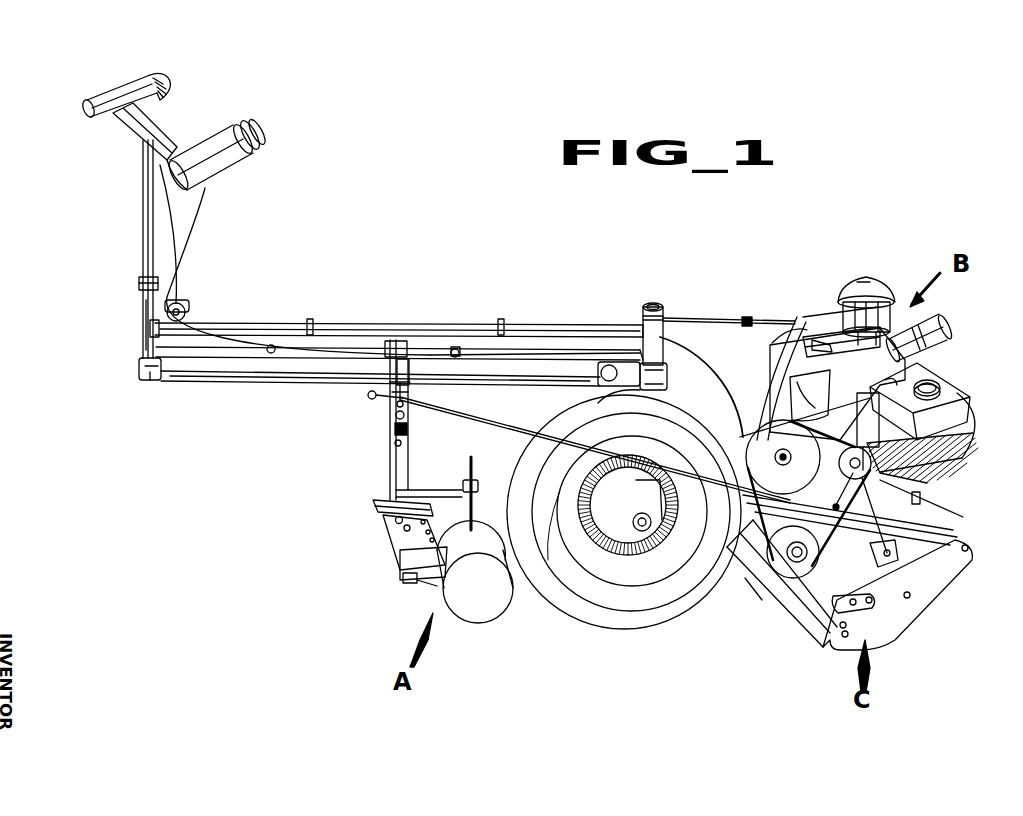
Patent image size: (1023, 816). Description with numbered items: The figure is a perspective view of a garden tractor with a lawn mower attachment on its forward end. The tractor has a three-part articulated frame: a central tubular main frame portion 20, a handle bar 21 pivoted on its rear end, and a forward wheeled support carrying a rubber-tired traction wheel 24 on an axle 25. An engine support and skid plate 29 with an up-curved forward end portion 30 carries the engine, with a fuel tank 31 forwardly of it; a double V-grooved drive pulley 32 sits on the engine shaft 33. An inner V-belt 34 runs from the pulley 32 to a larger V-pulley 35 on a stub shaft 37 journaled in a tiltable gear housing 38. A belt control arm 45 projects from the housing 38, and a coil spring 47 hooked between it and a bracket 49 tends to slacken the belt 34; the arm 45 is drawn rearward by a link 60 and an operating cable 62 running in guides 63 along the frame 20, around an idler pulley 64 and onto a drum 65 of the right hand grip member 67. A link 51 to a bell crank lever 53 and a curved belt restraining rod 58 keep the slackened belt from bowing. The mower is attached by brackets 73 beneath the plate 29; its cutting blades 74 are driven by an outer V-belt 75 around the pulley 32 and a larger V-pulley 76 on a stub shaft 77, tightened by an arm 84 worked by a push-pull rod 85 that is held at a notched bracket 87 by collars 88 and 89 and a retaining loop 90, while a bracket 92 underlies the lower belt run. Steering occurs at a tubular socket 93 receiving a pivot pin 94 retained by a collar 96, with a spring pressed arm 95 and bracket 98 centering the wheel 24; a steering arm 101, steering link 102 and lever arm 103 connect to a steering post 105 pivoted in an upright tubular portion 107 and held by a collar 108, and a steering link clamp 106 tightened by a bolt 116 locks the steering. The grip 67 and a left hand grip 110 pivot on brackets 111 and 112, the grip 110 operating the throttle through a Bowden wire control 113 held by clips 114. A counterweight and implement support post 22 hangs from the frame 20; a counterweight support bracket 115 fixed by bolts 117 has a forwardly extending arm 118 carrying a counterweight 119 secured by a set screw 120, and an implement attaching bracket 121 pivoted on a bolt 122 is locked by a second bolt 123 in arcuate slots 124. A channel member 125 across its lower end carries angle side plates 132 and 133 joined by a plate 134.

The main frame portion 20 is at (360, 336).
The handle bar 21 is at (127, 128).
The implement hitch and counterweight support post 22 is at (389, 448).
The traction wheel 24 is at (600, 580).
The wheel axle 25 is at (662, 533).
The engine support and skid plate 29 is at (940, 482).
The up-curved forward end portion 30 is at (970, 453).
The fuel tank 31 is at (915, 378).
The drive pulley 32 is at (862, 467).
The engine shaft 33 is at (947, 523).
The inner V-belt 34 is at (735, 432).
The larger V-pulley 35 is at (794, 448).
The stub shaft 37 is at (743, 515).
The gear housing 38 is at (727, 567).
The belt control arm 45 is at (810, 340).
The coil spring 47 is at (830, 337).
The bracket 49 is at (823, 340).
The link 51 is at (820, 413).
The bell crank lever 53 is at (913, 415).
The belt restraining rod 58 is at (842, 497).
The link 60 is at (770, 320).
The operating cable 62 is at (198, 224).
The guides 63 is at (312, 327).
The idler pulley 64 is at (185, 303).
The drum 65 is at (262, 140).
The right hand grip member 67 is at (233, 163).
The brackets 73 is at (917, 498).
The cutting blades 74 is at (888, 562).
The outer V-belt 75 is at (777, 567).
The larger V-pulley 76 is at (788, 562).
The stub shaft 77 is at (802, 556).
The belt tightener arm 84 is at (762, 582).
The push-pull rod 85 is at (490, 423).
The bracket 87 is at (410, 391).
The collar 88 is at (387, 410).
The collar 89 is at (368, 397).
The retaining loop 90 is at (410, 413).
The bracket 92 is at (847, 613).
The tubular socket 93 is at (670, 333).
The pivot pin 94 is at (657, 310).
The spring pressed arm 95 is at (602, 375).
The collar 96 is at (663, 320).
The bracket 98 is at (620, 393).
The steering arm 101 is at (697, 377).
The steering link 102 is at (217, 388).
The lever arm 103 is at (139, 373).
The steering post 105 is at (142, 245).
The steering link clamp 106 is at (421, 360).
The upright tubular portion 107 is at (142, 333).
The collar 108 is at (139, 283).
The left hand grip 110 is at (88, 106).
The bracket 111 is at (217, 124).
The bracket 112 is at (100, 92).
The Bowden wire control 113 is at (192, 309).
The clips 114 is at (293, 352).
The counterweight support bracket 115 is at (393, 465).
The bolt 116 is at (413, 373).
The bolts 117 is at (410, 423).
The forwardly extending arm 118 is at (468, 483).
The counterweight 119 is at (492, 598).
The set screw 120 is at (473, 480).
The implement attaching bracket 121 is at (390, 547).
The bolt 122 is at (400, 552).
The second bolt 123 is at (390, 530).
The arcuate slots 124 is at (380, 510).
The channel member 125 is at (400, 580).
The angle side plate 132 is at (388, 506).
The angle side plate 133 is at (413, 583).
The plate 134 is at (423, 597).